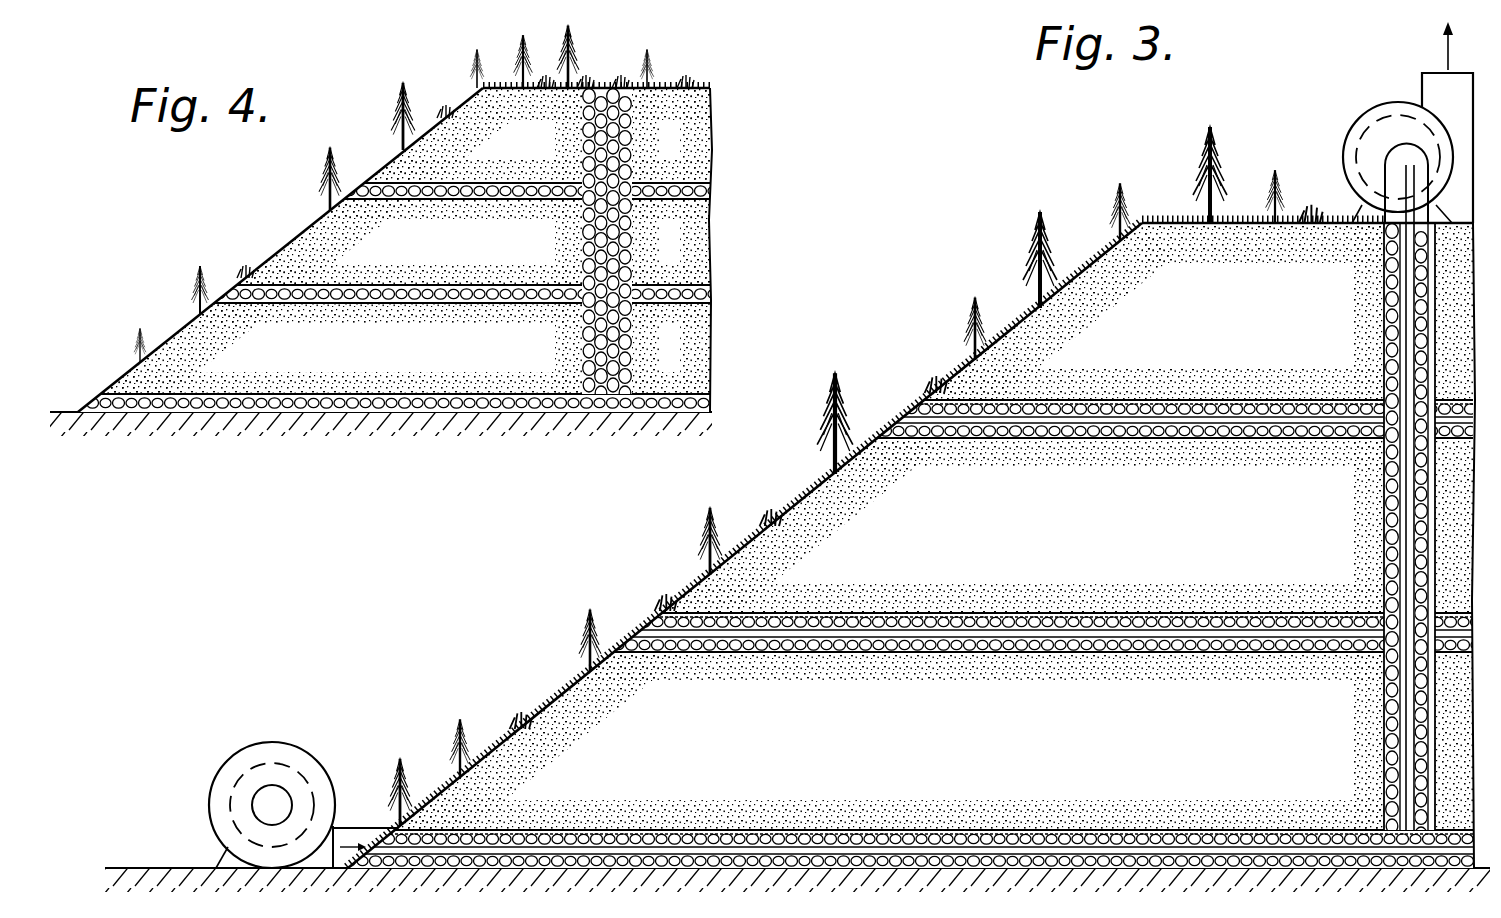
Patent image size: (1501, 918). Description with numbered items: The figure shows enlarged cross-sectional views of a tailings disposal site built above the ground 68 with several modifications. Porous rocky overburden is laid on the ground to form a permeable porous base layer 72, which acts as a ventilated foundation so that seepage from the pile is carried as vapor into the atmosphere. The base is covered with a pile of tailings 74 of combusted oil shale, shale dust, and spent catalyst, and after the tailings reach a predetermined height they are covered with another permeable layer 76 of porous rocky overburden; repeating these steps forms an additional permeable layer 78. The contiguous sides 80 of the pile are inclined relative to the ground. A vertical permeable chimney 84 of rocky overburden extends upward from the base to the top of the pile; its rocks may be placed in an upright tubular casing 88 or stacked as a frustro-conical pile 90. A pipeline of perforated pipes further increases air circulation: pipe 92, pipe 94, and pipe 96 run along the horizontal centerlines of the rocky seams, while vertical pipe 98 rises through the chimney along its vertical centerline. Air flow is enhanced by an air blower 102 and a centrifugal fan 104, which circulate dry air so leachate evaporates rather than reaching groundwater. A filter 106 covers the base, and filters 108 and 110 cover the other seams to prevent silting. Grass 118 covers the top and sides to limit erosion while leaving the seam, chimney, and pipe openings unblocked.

In FIG. 3, the ground 68 is at (182, 868).
In FIG. 4, the ground 68 is at (100, 412).
In FIG. 3, the porous base layer 72 is at (752, 868).
In FIG. 4, the porous base layer 72 is at (357, 412).
In FIG. 3, the tailings 74 is at (712, 753).
In FIG. 4, the tailings 74 is at (492, 354).
In FIG. 3, the permeable layer 76 is at (770, 652).
In FIG. 4, the permeable layer 76 is at (332, 303).
In FIG. 3, the additional permeable layer 78 is at (965, 440).
In FIG. 4, the additional permeable layer 78 is at (372, 199).
In FIG. 3, the sides 80 is at (700, 578).
In FIG. 4, the sides 80 is at (306, 228).
In FIG. 3, the vertical permeable chimney 84 is at (1400, 285).
In FIG. 3, the upright tubular casing 88 is at (1400, 750).
In FIG. 4, the frustro-conical pile 90 is at (585, 240).
In FIG. 3, the pipe 92 is at (925, 830).
In FIG. 3, the pipe 94 is at (1072, 613).
In FIG. 3, the pipe 96 is at (1105, 400).
In FIG. 3, the vertical pipe 98 is at (1400, 495).
In FIG. 3, the air blower 102 is at (232, 778).
In FIG. 3, the centrifugal fan 104 is at (1367, 122).
In FIG. 3, the filter 106 is at (1130, 830).
In FIG. 3, the filter 108 is at (1195, 613).
In FIG. 3, the filter 110 is at (1222, 400).
In FIG. 3, the grass 118 is at (1168, 222).
In FIG. 4, the grass 118 is at (653, 88).